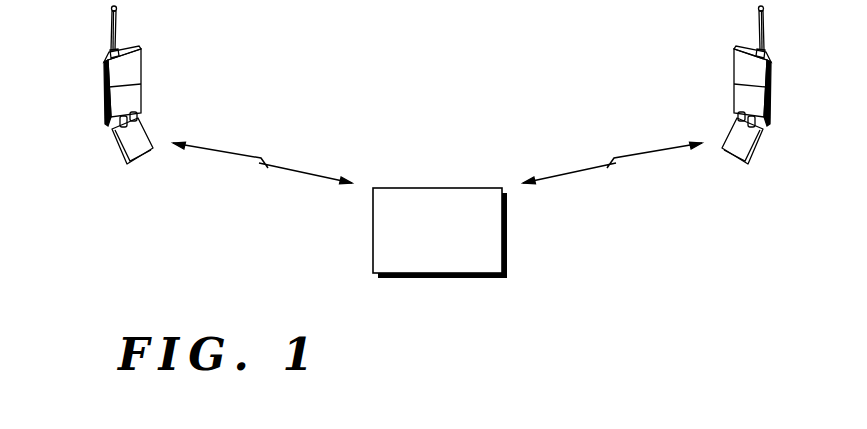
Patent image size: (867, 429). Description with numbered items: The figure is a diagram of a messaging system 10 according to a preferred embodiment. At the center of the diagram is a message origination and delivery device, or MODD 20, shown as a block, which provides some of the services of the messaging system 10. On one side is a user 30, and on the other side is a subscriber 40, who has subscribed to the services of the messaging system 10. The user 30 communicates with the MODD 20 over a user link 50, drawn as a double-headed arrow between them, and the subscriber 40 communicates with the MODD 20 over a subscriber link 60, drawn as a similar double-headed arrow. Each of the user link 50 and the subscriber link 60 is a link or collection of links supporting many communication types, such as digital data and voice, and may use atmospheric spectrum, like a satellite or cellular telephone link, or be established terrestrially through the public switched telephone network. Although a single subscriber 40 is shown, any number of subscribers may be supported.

The messaging system 10 is at (673, 305).
The message origination and delivery device (MODD) 20 is at (440, 277).
The user 30 is at (147, 63).
The subscriber 40 is at (732, 67).
The user link 50 is at (305, 170).
The subscriber link 60 is at (575, 172).